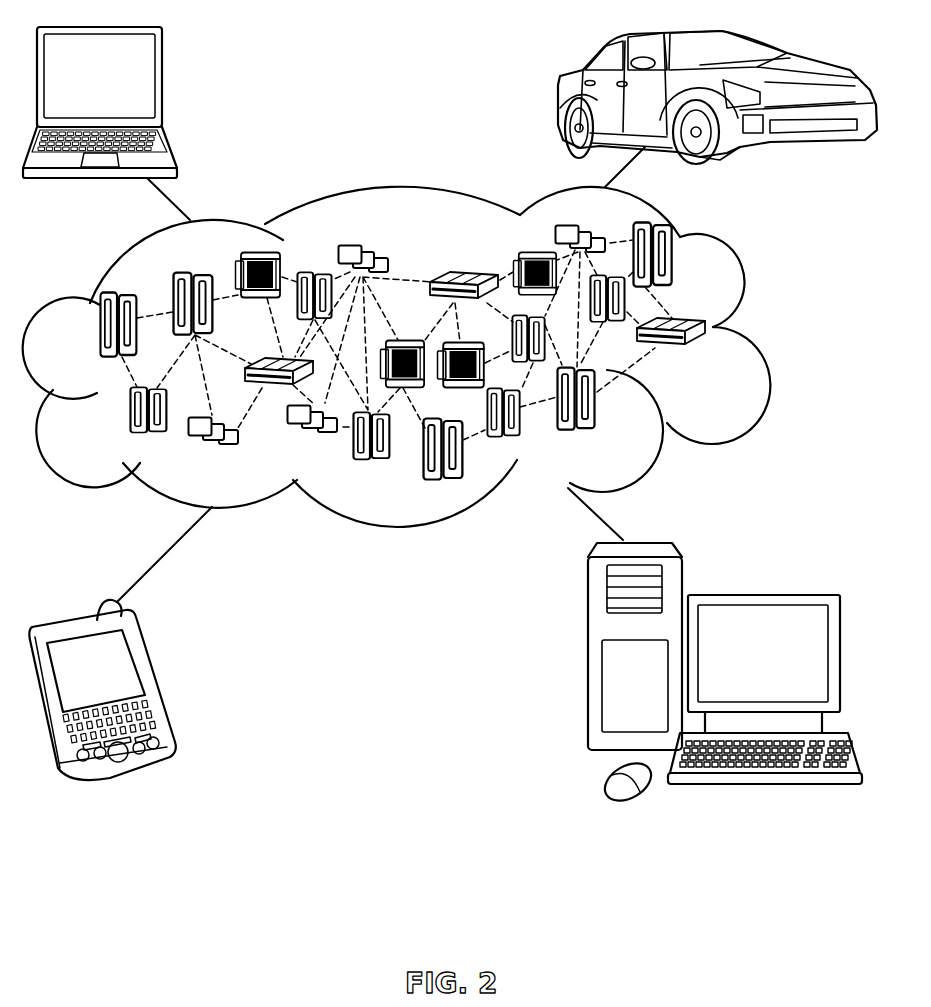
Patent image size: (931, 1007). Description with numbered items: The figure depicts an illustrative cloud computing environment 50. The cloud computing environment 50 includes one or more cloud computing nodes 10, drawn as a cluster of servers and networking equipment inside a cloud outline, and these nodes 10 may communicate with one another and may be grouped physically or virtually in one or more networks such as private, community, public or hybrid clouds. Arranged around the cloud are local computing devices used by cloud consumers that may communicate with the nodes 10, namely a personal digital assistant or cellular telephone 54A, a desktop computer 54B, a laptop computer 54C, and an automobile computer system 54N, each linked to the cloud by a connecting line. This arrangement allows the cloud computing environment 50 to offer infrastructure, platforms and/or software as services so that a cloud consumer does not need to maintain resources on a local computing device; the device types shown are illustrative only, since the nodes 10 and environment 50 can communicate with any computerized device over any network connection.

The cloud computing nodes 10 is at (716, 364).
The cloud computing environment 50 is at (762, 333).
The personal digital assistant or cellular telephone 54A is at (152, 682).
The desktop computer 54B is at (762, 595).
The laptop computer 54C is at (163, 81).
The automobile computer system 54N is at (560, 95).